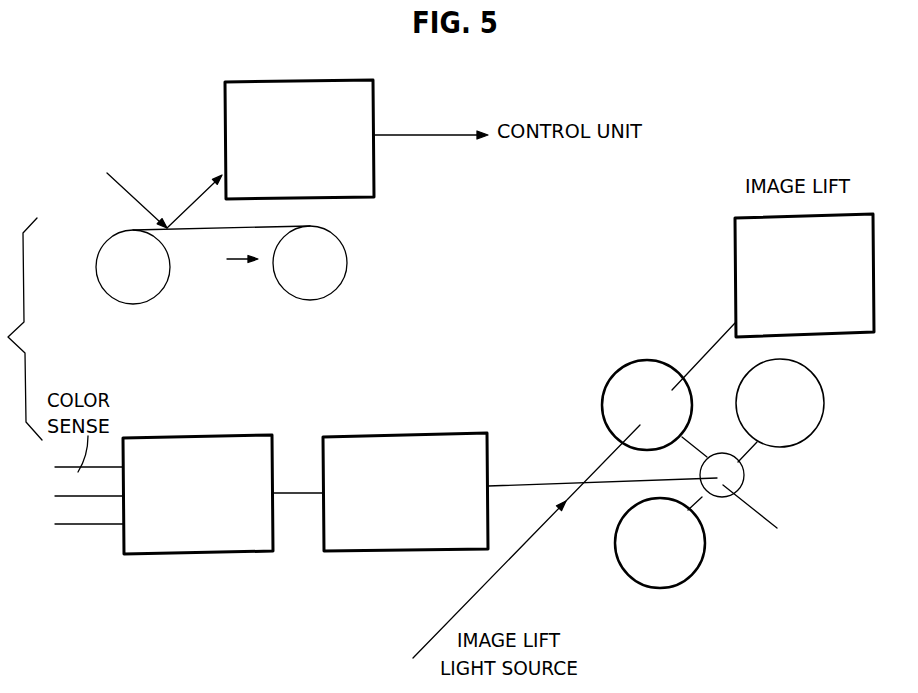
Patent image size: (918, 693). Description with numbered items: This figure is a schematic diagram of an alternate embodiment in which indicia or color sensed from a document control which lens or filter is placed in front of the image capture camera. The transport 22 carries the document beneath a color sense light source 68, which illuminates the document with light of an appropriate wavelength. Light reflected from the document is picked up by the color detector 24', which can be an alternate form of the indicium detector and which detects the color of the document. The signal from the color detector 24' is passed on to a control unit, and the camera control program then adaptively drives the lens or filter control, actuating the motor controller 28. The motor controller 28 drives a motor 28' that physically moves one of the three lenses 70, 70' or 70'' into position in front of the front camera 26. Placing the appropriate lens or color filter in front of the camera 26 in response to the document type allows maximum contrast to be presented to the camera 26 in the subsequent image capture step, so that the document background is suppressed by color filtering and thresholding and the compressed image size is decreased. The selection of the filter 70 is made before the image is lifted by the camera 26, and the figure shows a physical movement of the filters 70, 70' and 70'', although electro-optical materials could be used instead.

The color sense light source 68 is at (90, 203).
The color detector 24' is at (299, 139).
The transport 22 is at (194, 250).
The motor controller 28 is at (305, 517).
The front camera 26 is at (812, 305).
The lens 70 is at (633, 396).
The lens 70' is at (794, 399).
The lens 70'' is at (665, 557).
The motor 28' is at (754, 499).